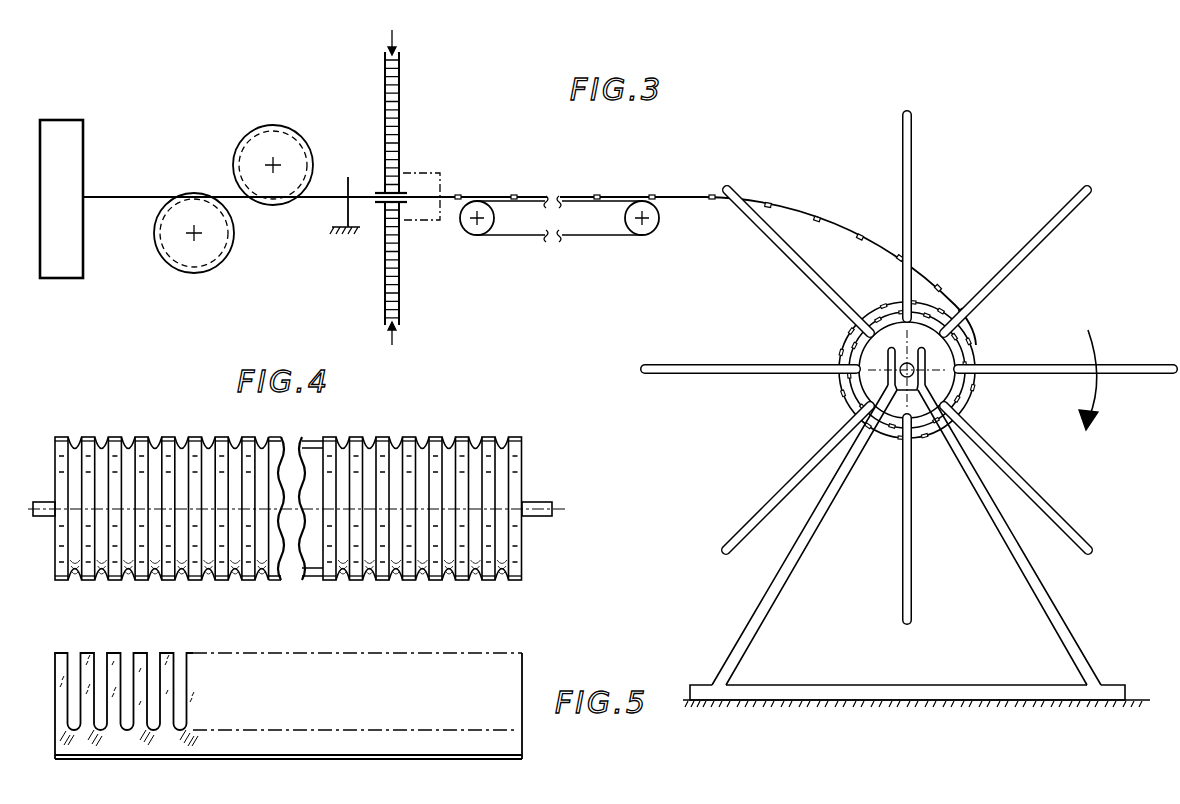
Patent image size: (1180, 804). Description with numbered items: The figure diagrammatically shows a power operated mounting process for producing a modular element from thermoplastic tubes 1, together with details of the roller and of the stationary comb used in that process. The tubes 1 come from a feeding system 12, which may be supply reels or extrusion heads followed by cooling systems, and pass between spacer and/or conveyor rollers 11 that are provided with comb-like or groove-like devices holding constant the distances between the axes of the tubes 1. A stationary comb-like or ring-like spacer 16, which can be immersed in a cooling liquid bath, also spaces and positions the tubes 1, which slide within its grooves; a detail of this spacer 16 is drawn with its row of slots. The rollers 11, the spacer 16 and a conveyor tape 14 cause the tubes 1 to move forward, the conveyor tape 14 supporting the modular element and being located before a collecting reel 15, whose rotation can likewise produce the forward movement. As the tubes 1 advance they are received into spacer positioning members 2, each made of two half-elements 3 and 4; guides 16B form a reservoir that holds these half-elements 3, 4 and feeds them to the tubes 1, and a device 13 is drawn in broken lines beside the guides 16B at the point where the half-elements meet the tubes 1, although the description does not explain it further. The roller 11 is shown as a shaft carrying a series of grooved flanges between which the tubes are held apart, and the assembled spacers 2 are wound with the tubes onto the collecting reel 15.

In FIG. 3, the thermoplastic tubes 1 is at (112, 195).
In FIG. 3, the spacer positioning members 2 is at (822, 219).
In FIG. 3, the spacer half-element 3 is at (401, 137).
In FIG. 3, the spacer half-element 4 is at (401, 277).
In FIG. 3, the spacer and/or conveyor rollers 11 is at (278, 125).
In FIG. 4, the spacer and/or conveyor rollers 11 is at (53, 466).
In FIG. 3, the supply reels or extrusion systems 12 is at (66, 119).
In FIG. 3, the heating device 13 is at (439, 169).
In FIG. 3, the conveyor tape 14 is at (512, 238).
In FIG. 3, the collecting reel 15 is at (866, 370).
In FIG. 3, the stationary comb-like spacer 16 is at (345, 213).
In FIG. 5, the stationary comb-like spacer 16 is at (52, 727).
In FIG. 3, the guides 16B is at (404, 90).